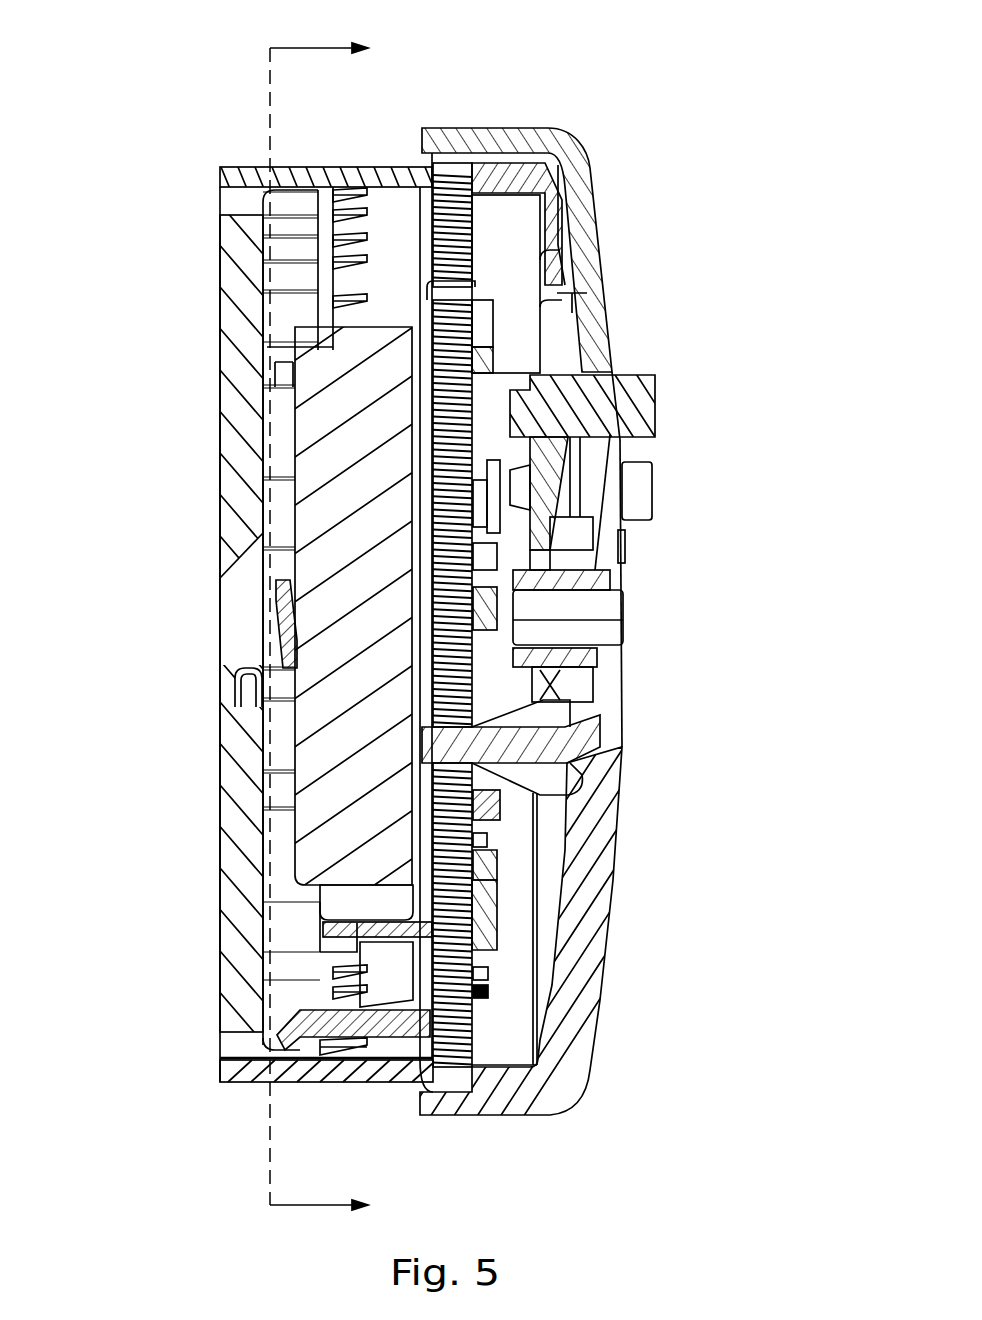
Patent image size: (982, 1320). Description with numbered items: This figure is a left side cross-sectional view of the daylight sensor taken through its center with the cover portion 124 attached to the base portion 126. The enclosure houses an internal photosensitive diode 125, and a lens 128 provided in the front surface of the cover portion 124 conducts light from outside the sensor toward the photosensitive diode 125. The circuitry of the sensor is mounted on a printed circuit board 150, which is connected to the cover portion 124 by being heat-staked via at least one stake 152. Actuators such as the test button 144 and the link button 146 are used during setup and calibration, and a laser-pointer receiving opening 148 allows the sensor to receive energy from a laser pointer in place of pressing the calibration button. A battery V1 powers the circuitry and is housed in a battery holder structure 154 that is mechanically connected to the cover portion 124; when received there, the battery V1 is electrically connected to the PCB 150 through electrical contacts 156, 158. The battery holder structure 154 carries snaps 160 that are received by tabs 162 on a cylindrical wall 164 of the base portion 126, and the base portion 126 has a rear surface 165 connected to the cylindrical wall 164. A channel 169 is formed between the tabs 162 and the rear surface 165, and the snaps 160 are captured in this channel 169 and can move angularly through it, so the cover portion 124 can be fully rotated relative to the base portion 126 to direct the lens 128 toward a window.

The cover portion 124 is at (588, 240).
The photosensitive diode 125 is at (500, 885).
The base portion 126 is at (243, 440).
The lens 128 is at (590, 978).
The test button 144 is at (647, 397).
The link button 146 is at (640, 483).
The laser-pointer receiving opening 148 is at (597, 623).
The printed circuit board 150 is at (453, 1033).
The stake 152 is at (575, 745).
The battery holder structure 154 is at (297, 925).
The electrical contact 156 is at (427, 413).
The electrical contact 158 is at (230, 367).
The snaps 160 is at (297, 997).
The tabs 162 is at (323, 260).
The cylindrical wall 164 is at (330, 172).
The rear surface 165 is at (297, 1020).
The channel 169 is at (290, 205).
The battery V1 is at (337, 487).